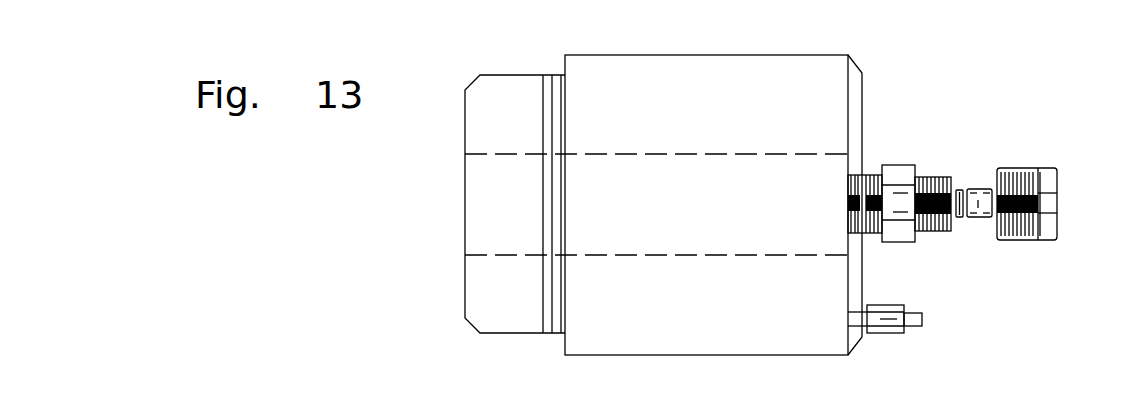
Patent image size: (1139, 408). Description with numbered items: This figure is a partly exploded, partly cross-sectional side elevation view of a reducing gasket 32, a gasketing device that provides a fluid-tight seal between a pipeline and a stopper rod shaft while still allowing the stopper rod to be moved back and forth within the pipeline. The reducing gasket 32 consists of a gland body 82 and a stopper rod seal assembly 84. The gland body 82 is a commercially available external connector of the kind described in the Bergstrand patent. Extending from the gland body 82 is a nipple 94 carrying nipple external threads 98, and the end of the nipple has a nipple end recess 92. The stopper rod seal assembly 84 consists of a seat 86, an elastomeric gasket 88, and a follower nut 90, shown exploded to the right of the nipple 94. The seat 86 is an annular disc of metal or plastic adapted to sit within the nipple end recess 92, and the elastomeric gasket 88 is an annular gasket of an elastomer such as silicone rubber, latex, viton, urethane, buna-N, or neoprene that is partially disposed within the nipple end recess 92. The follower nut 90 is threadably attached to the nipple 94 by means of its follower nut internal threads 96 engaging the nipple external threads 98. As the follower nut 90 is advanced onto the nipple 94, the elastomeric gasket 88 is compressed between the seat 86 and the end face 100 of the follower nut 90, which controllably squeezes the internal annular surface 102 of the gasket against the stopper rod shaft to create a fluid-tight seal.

The reducing gasket 32 is at (875, 48).
The gland body 82 is at (678, 355).
The stopper rod seal assembly 84 is at (1015, 67).
The seat 86 is at (957, 188).
The elastomeric gasket 88 is at (982, 189).
The follower nut 90 is at (1040, 167).
The nipple end recess 92 is at (958, 218).
The nipple 94 is at (937, 233).
The follower nut internal threads 96 is at (999, 235).
The nipple external threads 98 is at (940, 175).
The end face 100 is at (1042, 240).
The internal annular surface 102 is at (973, 218).